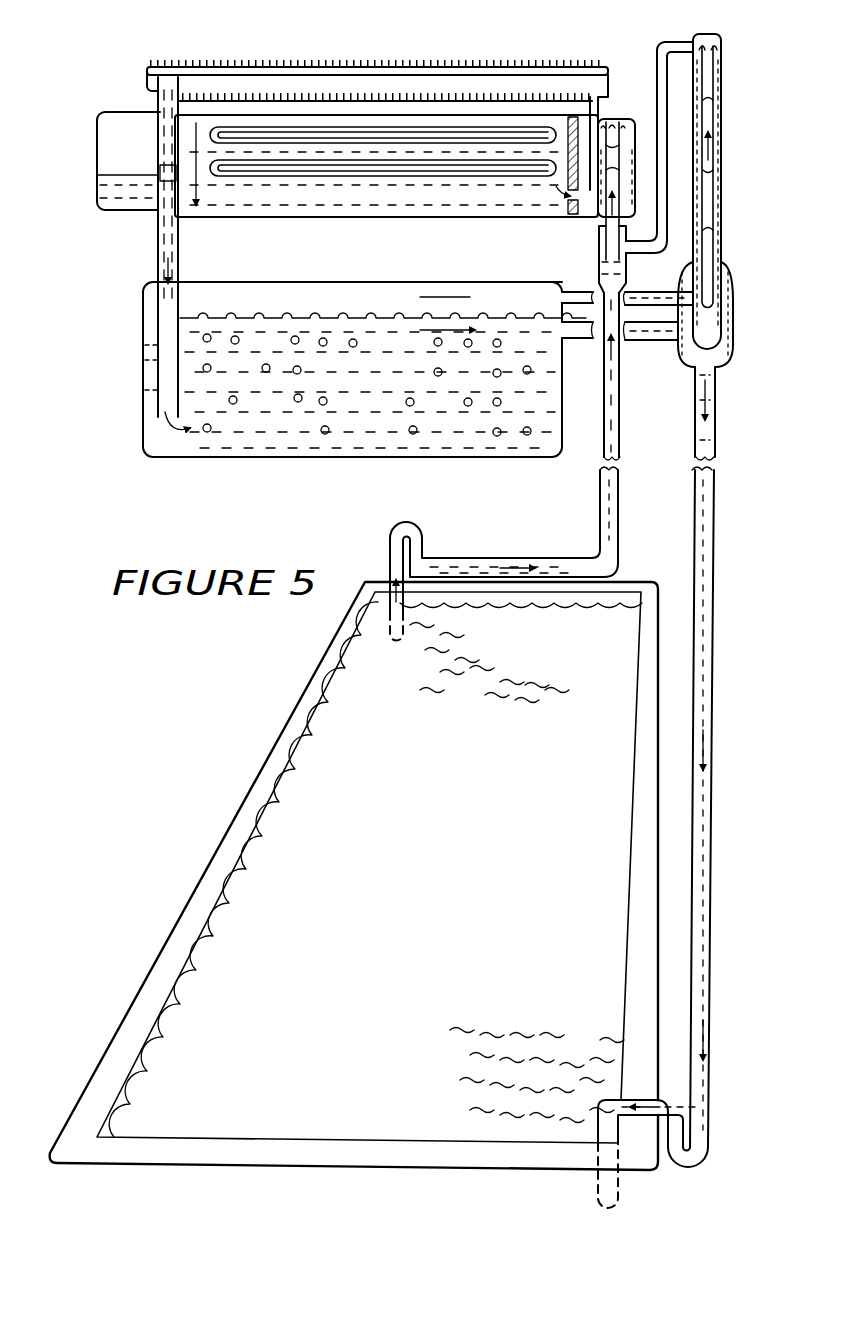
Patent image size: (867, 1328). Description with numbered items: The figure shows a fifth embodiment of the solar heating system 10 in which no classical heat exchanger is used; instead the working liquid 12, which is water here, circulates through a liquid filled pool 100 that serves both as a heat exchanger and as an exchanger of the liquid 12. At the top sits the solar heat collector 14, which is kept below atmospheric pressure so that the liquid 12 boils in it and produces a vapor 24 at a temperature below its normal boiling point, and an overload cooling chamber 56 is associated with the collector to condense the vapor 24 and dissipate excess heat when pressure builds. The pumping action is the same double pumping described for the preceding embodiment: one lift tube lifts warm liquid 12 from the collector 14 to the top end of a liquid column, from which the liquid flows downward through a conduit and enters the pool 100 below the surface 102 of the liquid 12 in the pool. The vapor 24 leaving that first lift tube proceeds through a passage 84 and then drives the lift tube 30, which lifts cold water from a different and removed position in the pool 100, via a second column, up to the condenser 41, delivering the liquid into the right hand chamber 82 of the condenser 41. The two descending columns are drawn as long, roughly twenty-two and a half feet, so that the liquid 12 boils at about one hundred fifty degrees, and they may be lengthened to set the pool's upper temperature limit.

The solar heating system 10 is at (116, 58).
The working liquid 12 is at (388, 382).
The solar heat collector 14 is at (143, 363).
The vapor 24 is at (372, 305).
The lift tube 30 is at (600, 228).
The condenser 41 is at (95, 128).
The overload cooling chamber 56 is at (432, 80).
The right hand chamber 82 is at (612, 119).
The passage 84 is at (673, 41).
The pool 100 is at (247, 788).
The surface 102 is at (243, 893).